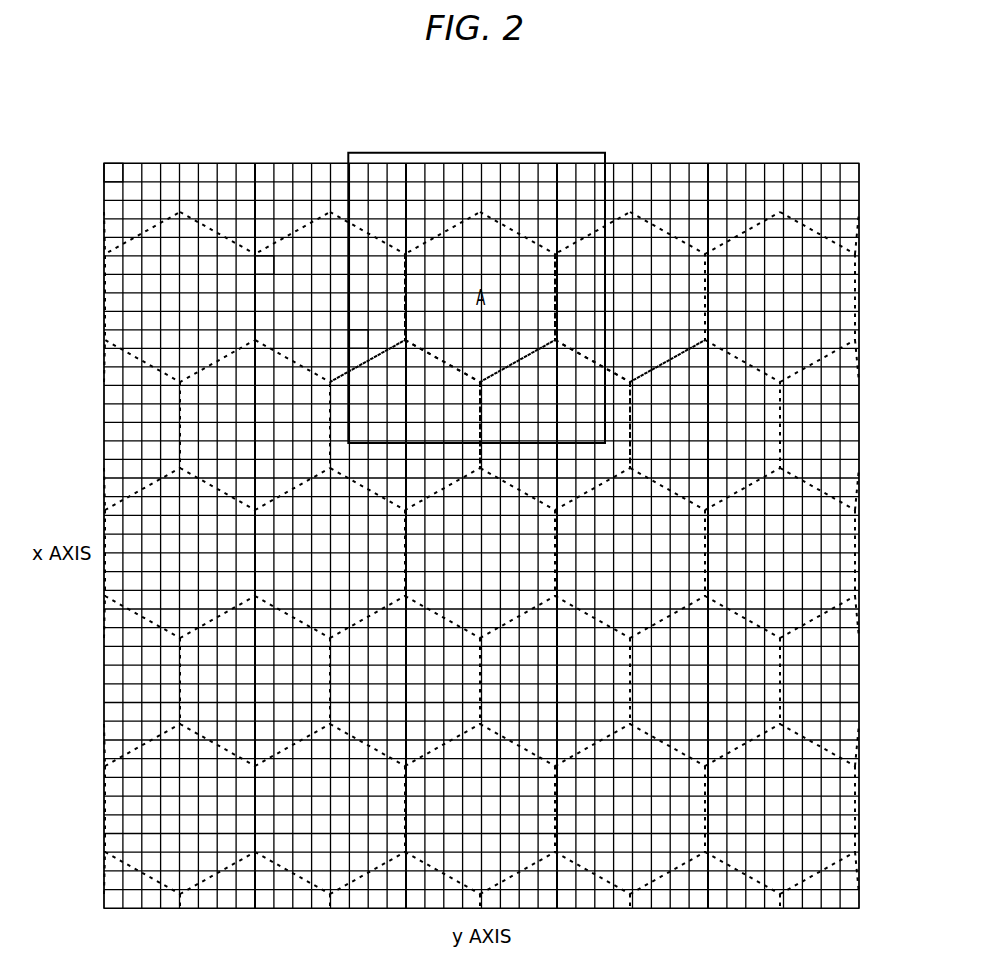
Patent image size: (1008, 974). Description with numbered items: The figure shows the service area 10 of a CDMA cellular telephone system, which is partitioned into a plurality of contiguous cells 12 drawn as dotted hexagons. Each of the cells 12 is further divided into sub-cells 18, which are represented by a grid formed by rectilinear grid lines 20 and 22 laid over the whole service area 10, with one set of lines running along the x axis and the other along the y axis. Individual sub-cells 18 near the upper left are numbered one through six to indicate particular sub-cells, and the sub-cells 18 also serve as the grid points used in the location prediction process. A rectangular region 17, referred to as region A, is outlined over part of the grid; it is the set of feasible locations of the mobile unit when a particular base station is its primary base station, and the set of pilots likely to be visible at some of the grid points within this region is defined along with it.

The service area 10 is at (481, 494).
The cells 12 is at (498, 504).
The region 17 is at (503, 287).
The sub-cells 18 is at (331, 225).
The grid lines 20 is at (452, 535).
The grid lines 22 is at (88, 165).